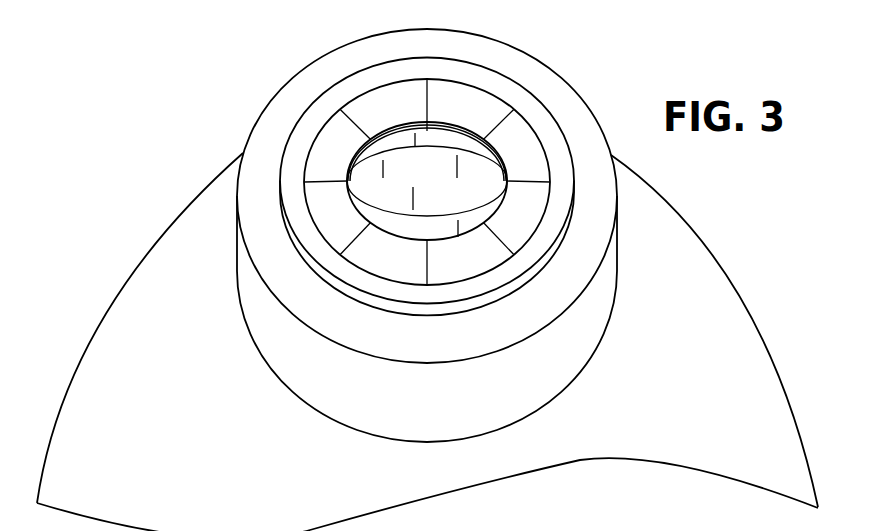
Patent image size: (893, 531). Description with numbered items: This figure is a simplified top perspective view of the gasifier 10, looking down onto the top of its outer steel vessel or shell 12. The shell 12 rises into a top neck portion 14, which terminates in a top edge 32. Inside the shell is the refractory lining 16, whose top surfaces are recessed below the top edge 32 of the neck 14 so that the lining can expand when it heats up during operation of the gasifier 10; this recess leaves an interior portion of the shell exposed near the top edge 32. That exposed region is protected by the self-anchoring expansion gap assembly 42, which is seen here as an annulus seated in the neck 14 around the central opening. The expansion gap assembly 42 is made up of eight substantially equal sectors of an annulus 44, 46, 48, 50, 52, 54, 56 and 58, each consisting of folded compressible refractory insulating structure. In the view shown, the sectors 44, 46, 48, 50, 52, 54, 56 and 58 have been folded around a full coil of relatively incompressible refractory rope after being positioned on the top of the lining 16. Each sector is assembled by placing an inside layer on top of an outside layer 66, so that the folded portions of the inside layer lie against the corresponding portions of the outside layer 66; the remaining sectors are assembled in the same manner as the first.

The gasifier 10 is at (140, 166).
The outer steel vessel or shell 12 is at (133, 305).
The top neck portion 14 is at (607, 275).
The refractory lining 16 is at (438, 177).
The top edge 32 is at (343, 92).
The self-anchoring expansion gap assembly 42 is at (510, 94).
The sector of an annulus 44 is at (482, 119).
The sector of an annulus 46 is at (540, 164).
The sector of an annulus 48 is at (537, 226).
The sector of an annulus 50 is at (482, 269).
The sector of an annulus 52 is at (403, 269).
The sector of an annulus 54 is at (348, 222).
The sector of an annulus 56 is at (348, 162).
The sector of an annulus 58 is at (407, 118).
The outside layer 66 is at (427, 494).